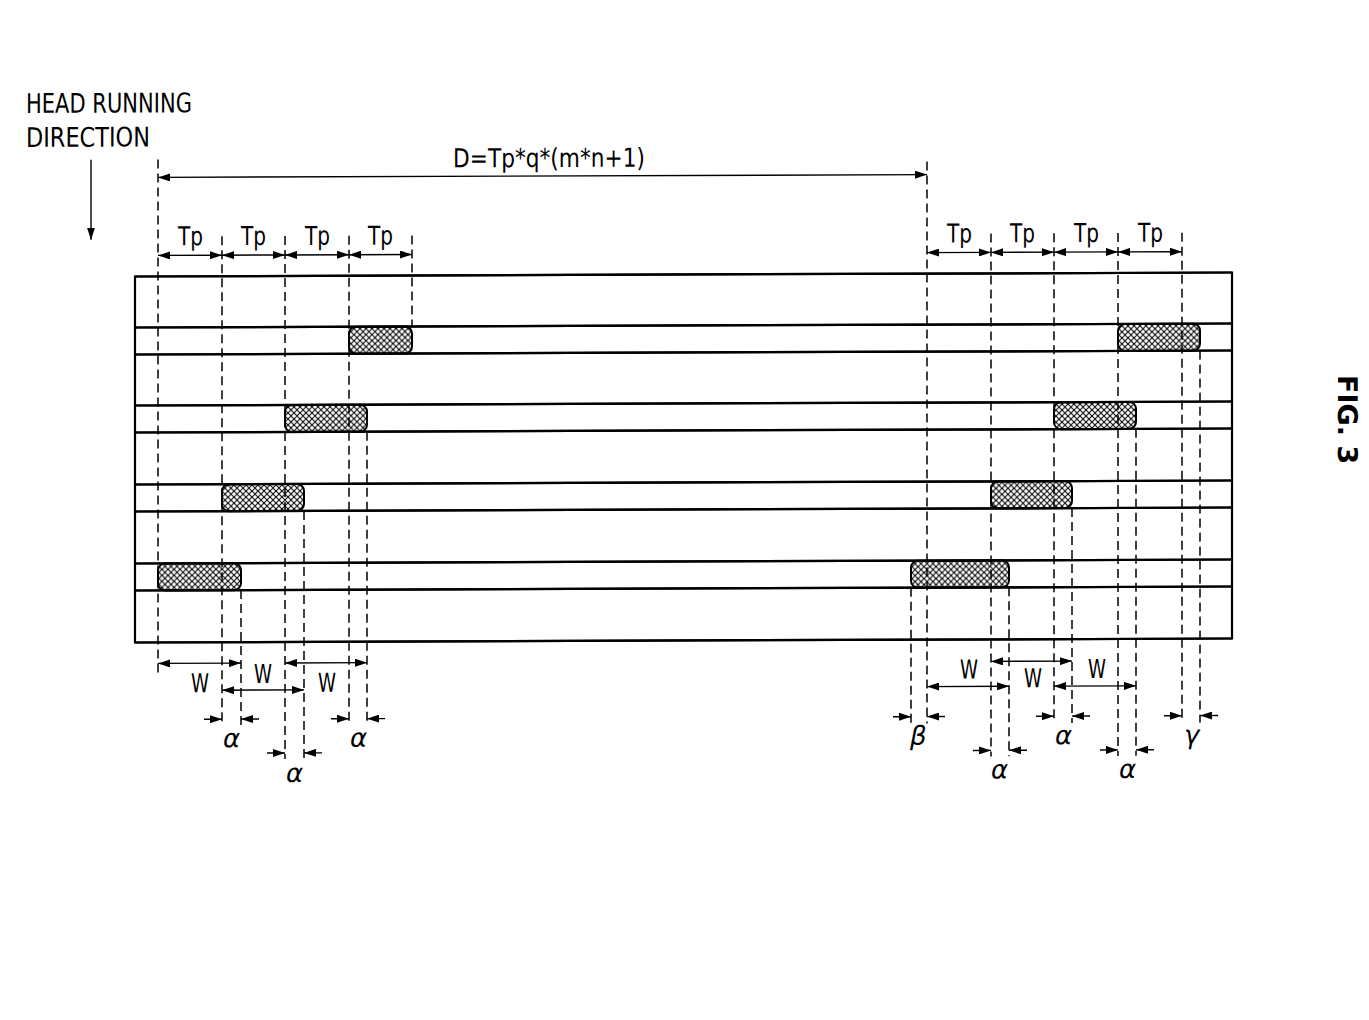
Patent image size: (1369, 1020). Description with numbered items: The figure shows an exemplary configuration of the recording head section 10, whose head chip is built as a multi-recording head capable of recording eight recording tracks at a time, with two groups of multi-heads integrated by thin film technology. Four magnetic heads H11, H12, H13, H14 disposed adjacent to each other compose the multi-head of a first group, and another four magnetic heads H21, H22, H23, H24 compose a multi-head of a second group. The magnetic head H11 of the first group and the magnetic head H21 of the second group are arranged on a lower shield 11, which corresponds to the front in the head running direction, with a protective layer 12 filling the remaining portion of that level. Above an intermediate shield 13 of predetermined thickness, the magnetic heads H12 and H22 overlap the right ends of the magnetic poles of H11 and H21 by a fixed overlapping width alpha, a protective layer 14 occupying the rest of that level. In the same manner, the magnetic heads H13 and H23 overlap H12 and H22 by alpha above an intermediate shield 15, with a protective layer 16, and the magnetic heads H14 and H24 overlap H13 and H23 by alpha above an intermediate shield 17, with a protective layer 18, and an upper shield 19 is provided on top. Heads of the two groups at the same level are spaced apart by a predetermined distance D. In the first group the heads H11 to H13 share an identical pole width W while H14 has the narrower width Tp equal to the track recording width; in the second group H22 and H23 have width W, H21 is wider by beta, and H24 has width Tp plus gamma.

The recording head section 10 is at (510, 277).
The lower shield 11 is at (135, 625).
The protective layer 12 is at (135, 578).
The intermediate shield 13 is at (135, 538).
The protective layer 14 is at (135, 498).
The intermediate shield 15 is at (135, 459).
The protective layer 16 is at (135, 420).
The intermediate shield 17 is at (135, 380).
The protective layer 18 is at (135, 342).
The upper shield 19 is at (135, 302).
The magnetic head H11 is at (158, 582).
The magnetic head H12 is at (222, 498).
The magnetic head H13 is at (367, 420).
The magnetic head H14 is at (412, 345).
The magnetic head H21 is at (913, 570).
The magnetic head H22 is at (991, 500).
The magnetic head H23 is at (1136, 419).
The magnetic head H24 is at (1200, 340).